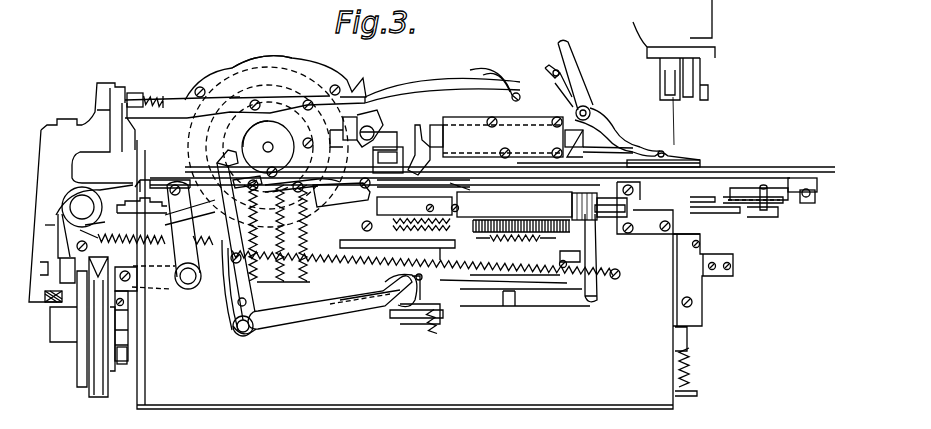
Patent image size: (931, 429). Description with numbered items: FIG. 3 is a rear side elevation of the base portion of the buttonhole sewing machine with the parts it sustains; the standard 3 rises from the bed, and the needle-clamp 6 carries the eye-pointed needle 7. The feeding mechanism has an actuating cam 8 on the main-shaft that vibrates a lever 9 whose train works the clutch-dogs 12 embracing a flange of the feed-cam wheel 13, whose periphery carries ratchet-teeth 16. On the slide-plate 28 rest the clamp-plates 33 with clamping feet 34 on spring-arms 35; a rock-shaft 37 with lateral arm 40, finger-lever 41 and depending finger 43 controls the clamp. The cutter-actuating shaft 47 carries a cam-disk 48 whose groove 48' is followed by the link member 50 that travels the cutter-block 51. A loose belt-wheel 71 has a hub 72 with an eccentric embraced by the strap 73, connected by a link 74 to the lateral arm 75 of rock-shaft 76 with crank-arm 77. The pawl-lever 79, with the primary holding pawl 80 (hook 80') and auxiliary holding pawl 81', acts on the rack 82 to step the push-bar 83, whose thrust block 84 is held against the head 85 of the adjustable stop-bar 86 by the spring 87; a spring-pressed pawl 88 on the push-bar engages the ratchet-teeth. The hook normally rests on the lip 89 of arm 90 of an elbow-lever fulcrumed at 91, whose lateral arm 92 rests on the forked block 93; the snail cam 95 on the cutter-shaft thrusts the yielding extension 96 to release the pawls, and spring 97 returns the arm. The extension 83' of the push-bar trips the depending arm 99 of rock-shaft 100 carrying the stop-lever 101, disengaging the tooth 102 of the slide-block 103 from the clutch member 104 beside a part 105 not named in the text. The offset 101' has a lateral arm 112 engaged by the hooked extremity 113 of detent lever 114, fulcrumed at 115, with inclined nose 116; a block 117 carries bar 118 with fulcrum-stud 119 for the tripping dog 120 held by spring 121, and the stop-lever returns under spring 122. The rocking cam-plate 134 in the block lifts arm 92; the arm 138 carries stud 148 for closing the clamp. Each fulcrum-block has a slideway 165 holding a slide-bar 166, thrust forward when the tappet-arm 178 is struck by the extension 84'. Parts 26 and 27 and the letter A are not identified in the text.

The hollow bracket-arm standard 3 is at (275, 141).
The needle-clamp 6 is at (668, 93).
The eye-pointed needle 7 is at (668, 134).
The actuating cam 8 is at (560, 300).
The lever 9 is at (596, 297).
The clutch-dogs 12 is at (560, 252).
The feed-cam wheel 13 is at (397, 246).
The ratchet-teeth 16 is at (502, 218).
The bed plate 26 is at (816, 207).
The clamp 27 is at (816, 193).
The slide-plate 28 is at (805, 177).
The clamp-plates 33 is at (788, 169).
The clamping feet 34 is at (693, 162).
The spring-arms 35 is at (647, 149).
The rock-shaft 37 is at (592, 121).
The lateral arm 40 is at (552, 74).
The finger-lever 41 is at (571, 78).
The depending finger 43 is at (607, 122).
The cutter-actuating shaft 47 is at (268, 146).
The cam-disk 48 is at (276, 65).
The groove 48' is at (264, 76).
The link member 50 is at (380, 140).
The cutter-block 51 is at (597, 150).
The loose belt-wheel 71 is at (102, 393).
The hub 72 is at (110, 383).
The strap 73 is at (119, 366).
The link 74 is at (131, 292).
The lateral arm 75 is at (161, 292).
The rock-shaft 76 is at (191, 282).
The crank-arm 77 is at (183, 230).
The pawl-lever 79 is at (188, 180).
The primary holding pawl 80 is at (294, 174).
The hook 80' is at (246, 172).
The link 81' is at (342, 204).
The rack 82 is at (173, 244).
The push-bar 83 is at (327, 202).
The depending rearward extension 83' is at (146, 230).
The thrust block 84 is at (514, 204).
The extension 84' is at (414, 206).
The head 85 is at (588, 198).
The adjustable stop-bar 86 is at (613, 211).
The spring 87 is at (472, 271).
The spring-pressed pawl 88 is at (426, 215).
The lateral lip 89 is at (222, 166).
The upwardly extending arm 90 is at (234, 285).
The fulcrum 91 is at (238, 331).
The lateral arm 92 is at (330, 302).
The forked block 93 is at (430, 303).
The snail-shaped cam 95 is at (255, 134).
The yielding extension 96 is at (236, 241).
The spring 97 is at (243, 338).
The depending arm 99 is at (62, 246).
The rock-shaft 100 is at (82, 207).
The tilting stop-lever 101 is at (48, 230).
The offset portion 101' is at (81, 192).
The tooth 102 is at (56, 289).
The spring-pressed slide-block 103 is at (62, 267).
The clutch member 104 is at (74, 298).
The screw 105 is at (95, 250).
The lateral arm 112 is at (135, 95).
The hooked extremity 113 is at (128, 113).
The detent lever 114 is at (279, 102).
The fulcrum 115 is at (254, 102).
The inclined nose 116 is at (375, 118).
The block 117 is at (388, 162).
The bar 118 is at (418, 125).
The fulcrum-stud 119 is at (357, 133).
The tripping dog 120 is at (343, 122).
The spring 121 is at (375, 131).
The spring 122 is at (153, 93).
The rocking cam-plate 134 is at (414, 282).
The forwardly extending arm 138 is at (442, 88).
The lateral stud 148 is at (530, 85).
The longitudinal slideway 165 is at (503, 130).
The slide-bar 166 is at (440, 125).
The tappet-arm 178 is at (415, 181).
The machine A is at (515, 353).